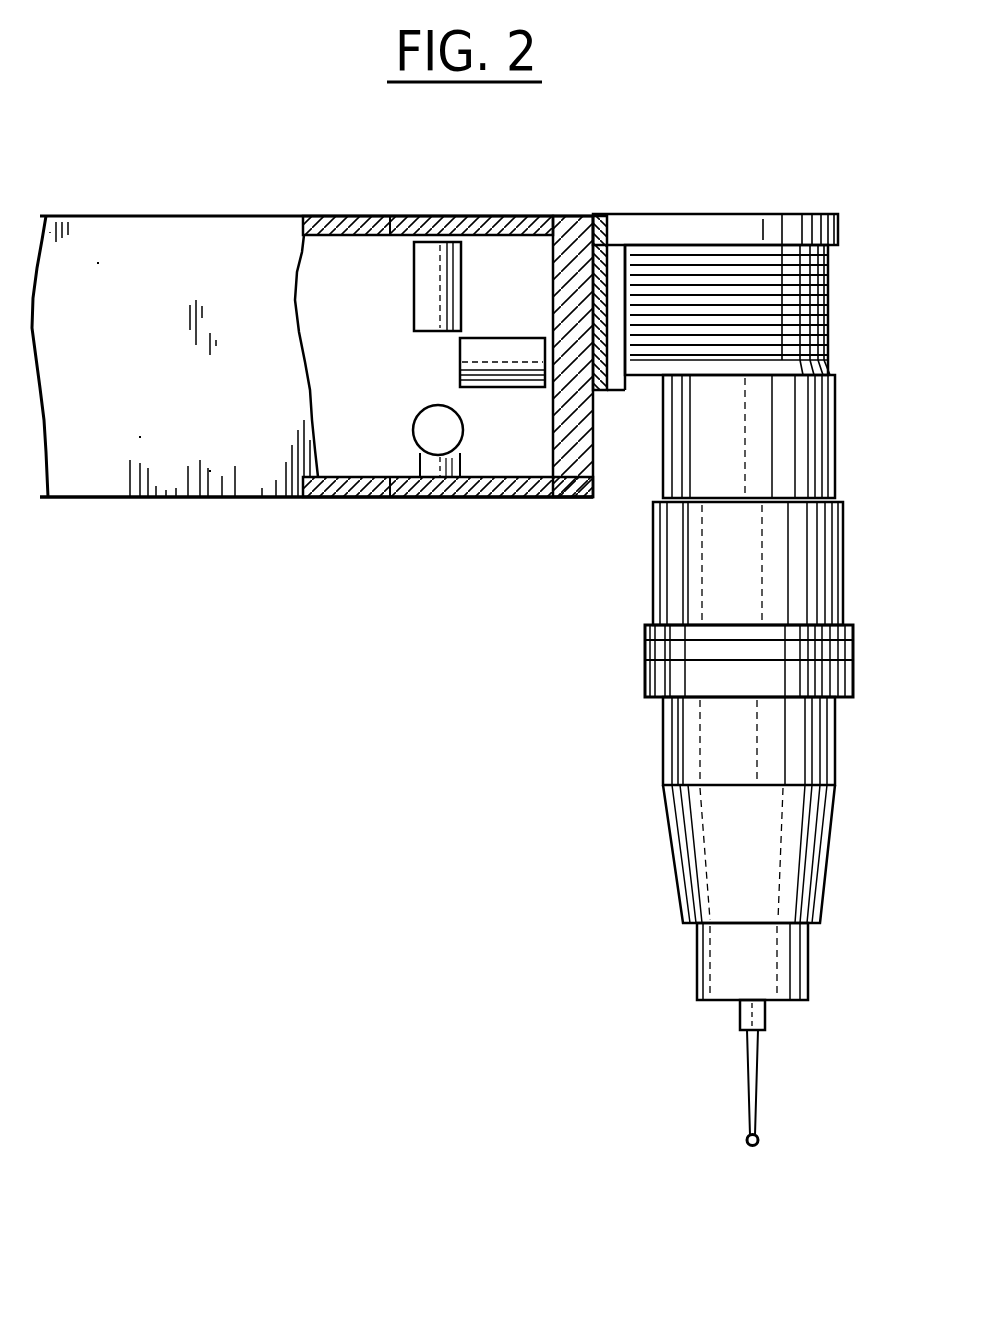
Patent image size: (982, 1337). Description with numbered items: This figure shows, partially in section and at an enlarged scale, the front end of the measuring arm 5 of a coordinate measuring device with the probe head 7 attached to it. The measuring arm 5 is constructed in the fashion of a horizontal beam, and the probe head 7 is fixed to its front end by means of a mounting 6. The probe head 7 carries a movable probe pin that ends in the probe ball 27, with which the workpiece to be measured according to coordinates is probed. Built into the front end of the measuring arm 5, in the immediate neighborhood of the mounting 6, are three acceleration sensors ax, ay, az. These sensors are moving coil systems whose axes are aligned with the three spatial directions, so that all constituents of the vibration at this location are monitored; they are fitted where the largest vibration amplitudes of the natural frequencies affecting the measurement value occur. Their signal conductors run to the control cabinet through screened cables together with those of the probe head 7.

The measuring arm 5 is at (107, 462).
The mounting 6 is at (838, 222).
The probe head 7 is at (803, 744).
The probe ball 27 is at (758, 1138).
The acceleration sensor ax is at (428, 423).
The acceleration sensor ay is at (492, 368).
The acceleration sensor az is at (447, 292).